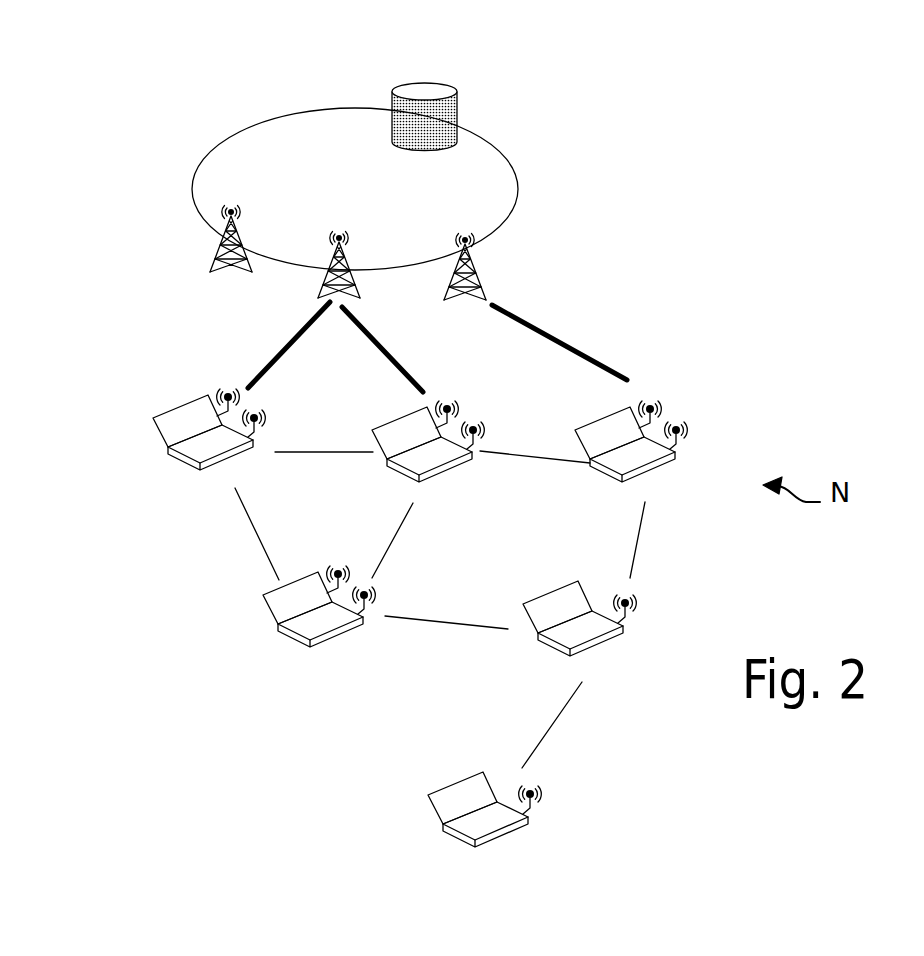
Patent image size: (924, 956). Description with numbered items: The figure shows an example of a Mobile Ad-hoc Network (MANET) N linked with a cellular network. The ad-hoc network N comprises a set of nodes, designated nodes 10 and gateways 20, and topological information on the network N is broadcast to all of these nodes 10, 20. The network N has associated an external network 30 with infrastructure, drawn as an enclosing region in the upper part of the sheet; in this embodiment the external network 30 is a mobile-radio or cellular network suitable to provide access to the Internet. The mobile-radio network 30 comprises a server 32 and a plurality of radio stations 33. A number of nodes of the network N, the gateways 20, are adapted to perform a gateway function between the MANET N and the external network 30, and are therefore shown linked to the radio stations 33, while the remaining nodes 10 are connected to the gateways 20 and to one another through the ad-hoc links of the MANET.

The node 10 is at (262, 632).
The gateway 20 is at (177, 397).
The external network 30 is at (498, 232).
The server 32 is at (457, 89).
The radio station 33 is at (458, 247).